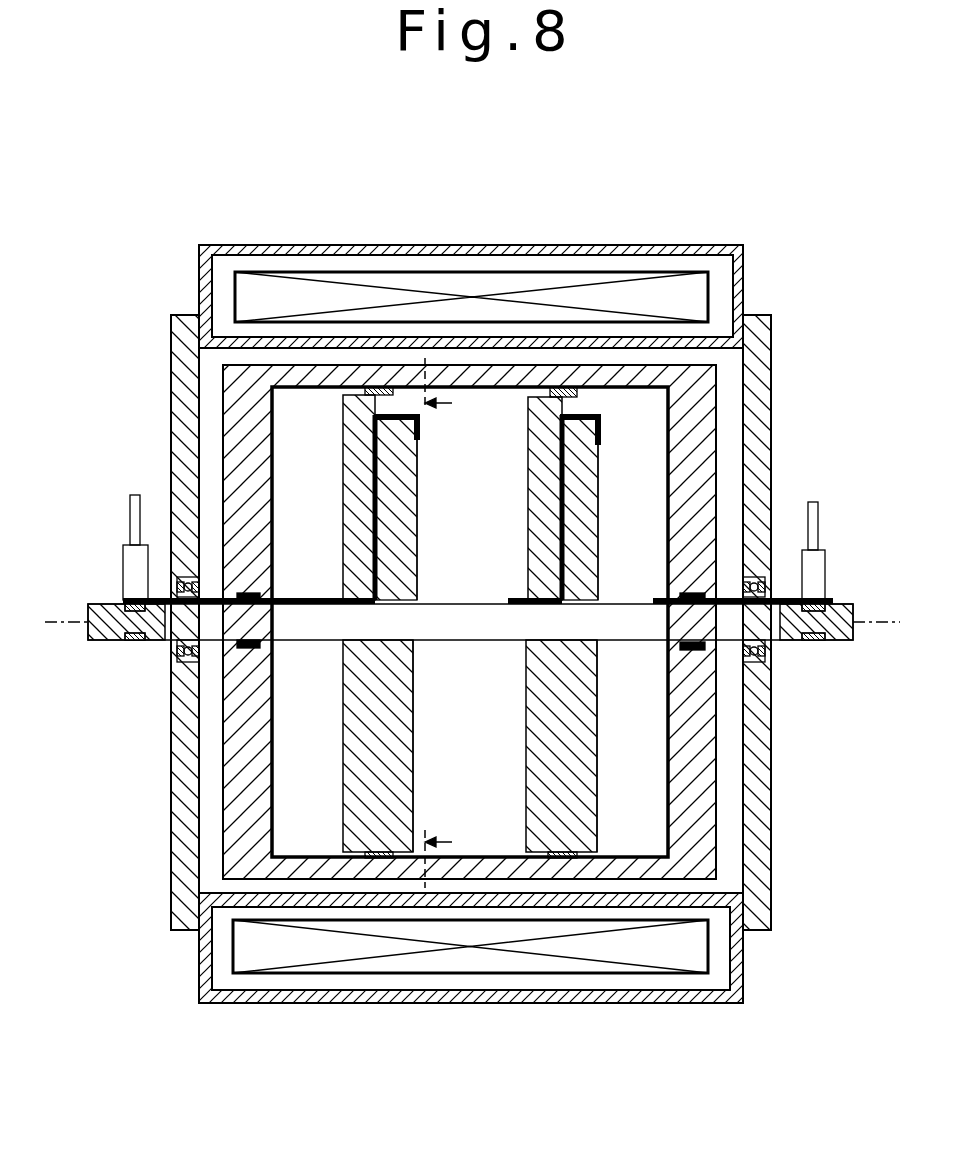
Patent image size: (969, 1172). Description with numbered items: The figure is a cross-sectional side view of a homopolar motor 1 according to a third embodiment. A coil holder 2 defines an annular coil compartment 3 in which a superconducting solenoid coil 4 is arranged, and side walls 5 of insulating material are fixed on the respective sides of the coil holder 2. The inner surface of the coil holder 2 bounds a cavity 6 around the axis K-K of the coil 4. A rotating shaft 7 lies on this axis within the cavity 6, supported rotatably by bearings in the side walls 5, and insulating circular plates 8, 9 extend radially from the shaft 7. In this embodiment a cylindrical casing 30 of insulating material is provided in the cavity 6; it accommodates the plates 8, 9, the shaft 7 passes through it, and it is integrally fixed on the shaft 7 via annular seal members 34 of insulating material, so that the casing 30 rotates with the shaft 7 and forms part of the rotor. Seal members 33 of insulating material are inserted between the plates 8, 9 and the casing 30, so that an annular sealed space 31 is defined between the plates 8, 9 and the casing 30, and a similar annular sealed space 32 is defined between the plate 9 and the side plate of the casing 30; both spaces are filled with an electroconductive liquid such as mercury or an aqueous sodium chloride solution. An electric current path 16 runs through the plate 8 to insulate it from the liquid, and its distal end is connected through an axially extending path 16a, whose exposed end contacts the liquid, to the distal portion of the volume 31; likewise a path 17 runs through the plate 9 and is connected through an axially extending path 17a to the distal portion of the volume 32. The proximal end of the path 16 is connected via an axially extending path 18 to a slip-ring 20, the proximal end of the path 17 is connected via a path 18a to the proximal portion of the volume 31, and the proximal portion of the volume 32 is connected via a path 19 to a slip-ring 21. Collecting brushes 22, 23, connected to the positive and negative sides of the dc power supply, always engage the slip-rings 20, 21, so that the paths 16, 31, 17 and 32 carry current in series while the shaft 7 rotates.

The homopolar motor 1 is at (818, 248).
The coil holder 2 is at (744, 256).
The coil compartment 3 is at (700, 268).
The solenoid coil 4 is at (615, 274).
The side walls 5 is at (772, 388).
The cavity 6 is at (215, 792).
The rotating shaft 7 is at (850, 642).
The circular plate 8 is at (343, 540).
The circular plate 9 is at (528, 540).
The electric current path 16 is at (373, 497).
The axially extending path 16a is at (374, 406).
The electric current path 17 is at (556, 497).
The axially extending path 17a is at (566, 408).
The axially extending path 18 is at (322, 598).
The axially extending path 18a is at (514, 598).
The axially extending path 19 is at (657, 598).
The slip-ring 20 is at (135, 641).
The slip-ring 21 is at (815, 642).
The collecting brush 22 is at (123, 566).
The collecting brush 23 is at (826, 566).
The cylindrical casing 30 is at (704, 810).
The sealed space 31 is at (460, 526).
The sealed space 32 is at (650, 551).
The seal members 33 is at (378, 850).
The annular seal members 34 is at (250, 648).